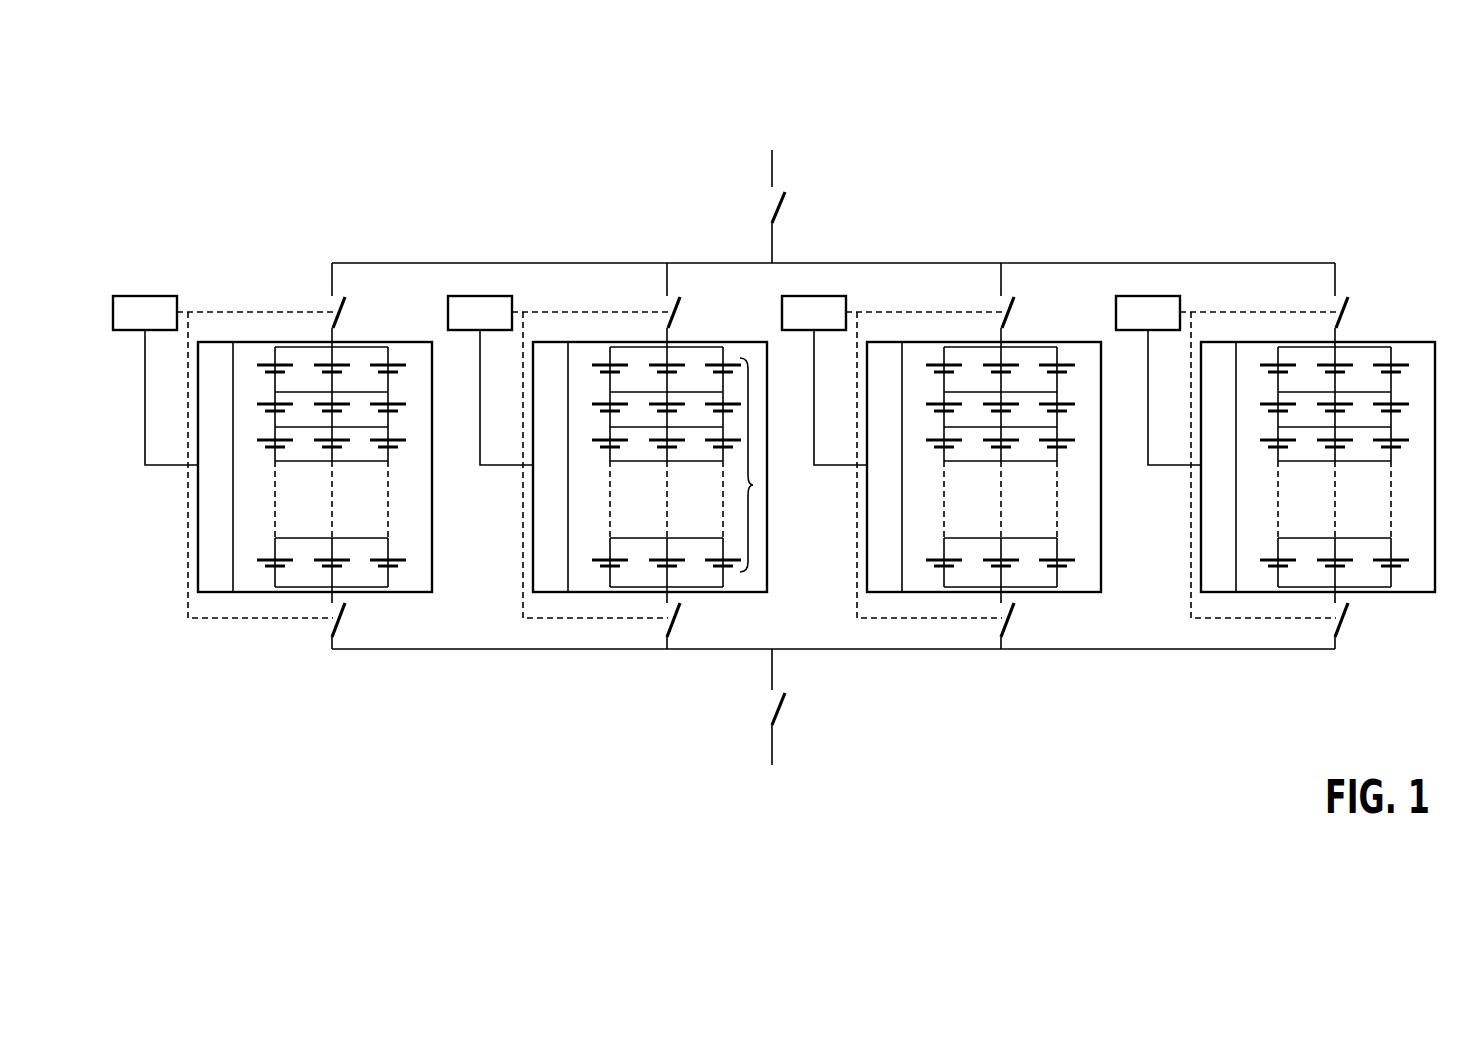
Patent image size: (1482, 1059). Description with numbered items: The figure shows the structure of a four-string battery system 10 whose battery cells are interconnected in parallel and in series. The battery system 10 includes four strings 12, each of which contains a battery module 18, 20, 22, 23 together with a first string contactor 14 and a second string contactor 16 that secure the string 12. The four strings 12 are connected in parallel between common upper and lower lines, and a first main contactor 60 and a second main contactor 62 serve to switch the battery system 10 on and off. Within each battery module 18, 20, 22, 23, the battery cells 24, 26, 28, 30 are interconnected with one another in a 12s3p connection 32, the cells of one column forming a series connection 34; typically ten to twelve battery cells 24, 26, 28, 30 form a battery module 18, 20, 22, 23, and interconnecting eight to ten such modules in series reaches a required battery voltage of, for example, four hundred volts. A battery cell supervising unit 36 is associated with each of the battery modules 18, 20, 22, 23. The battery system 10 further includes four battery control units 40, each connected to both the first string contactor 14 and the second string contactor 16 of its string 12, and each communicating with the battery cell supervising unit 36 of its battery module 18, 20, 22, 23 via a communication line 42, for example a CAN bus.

The battery system 10 is at (1397, 190).
The string 12 is at (330, 283).
The first string contactor 14 is at (347, 618).
The second string contactor 16 is at (347, 312).
The battery module 18 is at (370, 512).
The battery module 20 is at (666, 467).
The battery module 22 is at (1000, 467).
The battery module 23 is at (1334, 467).
The battery cell 24 is at (262, 362).
The battery cell 26 is at (322, 362).
The battery cell 28 is at (402, 362).
The battery cell 30 is at (403, 558).
The 12s3p connection 32 is at (248, 507).
The series connection 34 is at (756, 485).
The battery cell supervising unit 36 is at (215, 580).
The battery control unit 40 is at (142, 307).
The communication line 42 is at (145, 397).
The first main contactor 60 is at (780, 709).
The second main contactor 62 is at (787, 201).